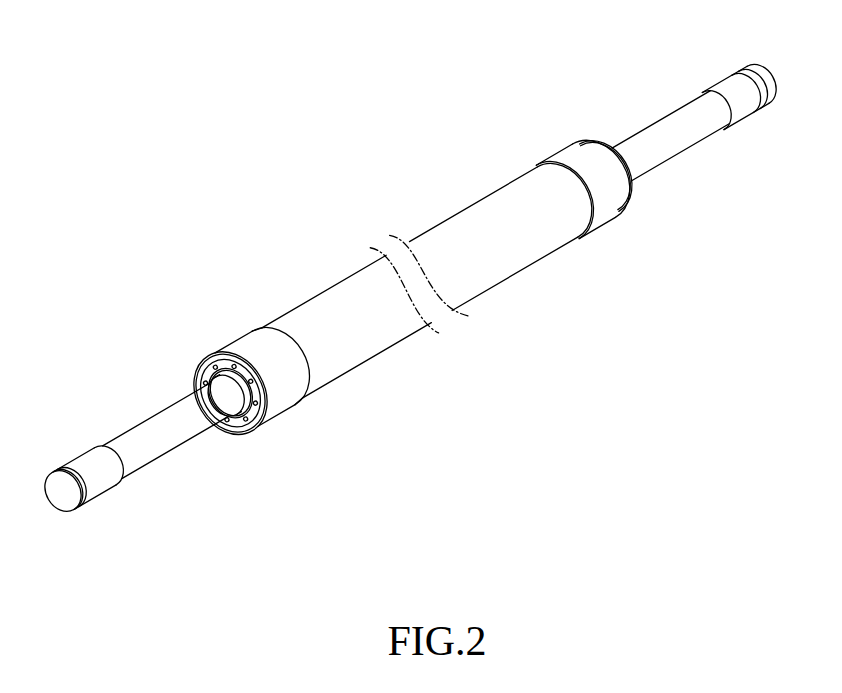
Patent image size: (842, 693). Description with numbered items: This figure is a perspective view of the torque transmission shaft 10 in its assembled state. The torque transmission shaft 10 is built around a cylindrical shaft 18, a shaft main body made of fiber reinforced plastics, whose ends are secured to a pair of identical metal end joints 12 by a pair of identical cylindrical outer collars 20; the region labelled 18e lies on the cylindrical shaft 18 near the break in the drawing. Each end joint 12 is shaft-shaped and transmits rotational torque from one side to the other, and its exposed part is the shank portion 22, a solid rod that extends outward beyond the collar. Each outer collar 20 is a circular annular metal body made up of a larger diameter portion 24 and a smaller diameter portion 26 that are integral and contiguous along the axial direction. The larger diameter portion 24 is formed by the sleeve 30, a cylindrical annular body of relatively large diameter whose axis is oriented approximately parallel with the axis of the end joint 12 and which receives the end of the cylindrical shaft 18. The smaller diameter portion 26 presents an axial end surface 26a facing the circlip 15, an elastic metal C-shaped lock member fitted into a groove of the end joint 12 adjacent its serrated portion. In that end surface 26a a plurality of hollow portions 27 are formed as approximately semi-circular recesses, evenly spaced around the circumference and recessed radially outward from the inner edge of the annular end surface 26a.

The torque transmission shaft 10 is at (411, 282).
The end joint 12 is at (117, 435).
The circlip 15 is at (225, 433).
The cylindrical shaft 18 is at (443, 222).
The end portion of rotor core 18e is at (336, 300).
The outer collar 20 is at (224, 341).
The shank portion 22 is at (148, 447).
The larger diameter portion 24 is at (240, 338).
The smaller diameter portion 26 is at (220, 364).
The end surface 26a is at (241, 434).
The hollow portions 27 is at (196, 368).
The sleeve 30 is at (287, 410).